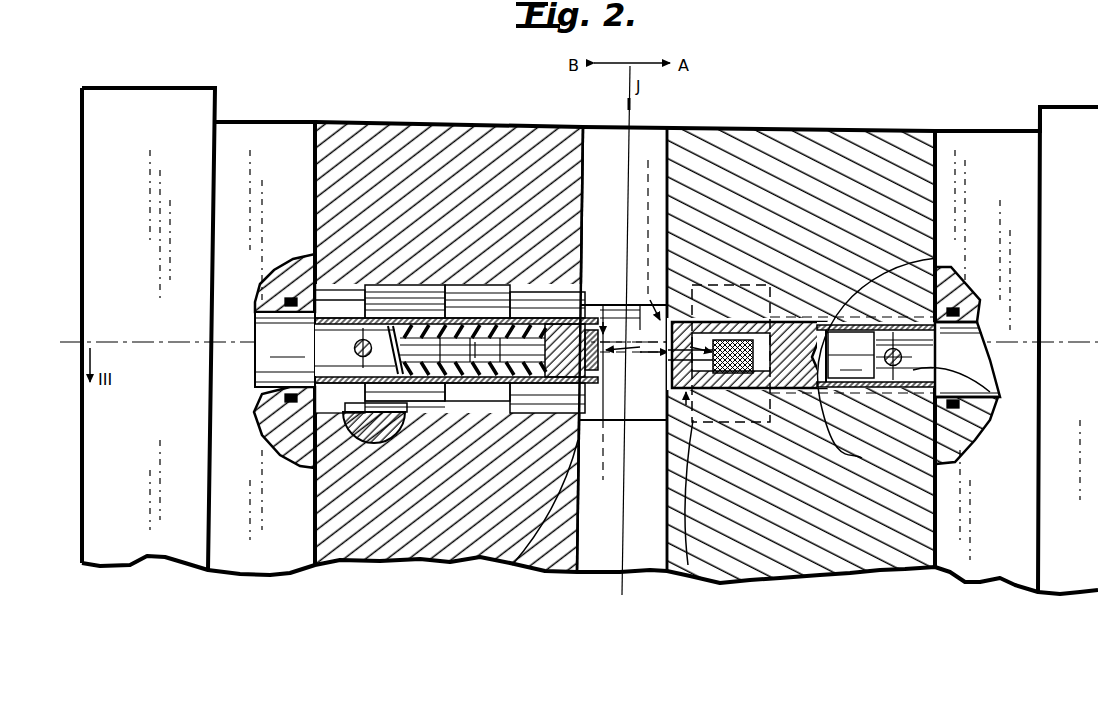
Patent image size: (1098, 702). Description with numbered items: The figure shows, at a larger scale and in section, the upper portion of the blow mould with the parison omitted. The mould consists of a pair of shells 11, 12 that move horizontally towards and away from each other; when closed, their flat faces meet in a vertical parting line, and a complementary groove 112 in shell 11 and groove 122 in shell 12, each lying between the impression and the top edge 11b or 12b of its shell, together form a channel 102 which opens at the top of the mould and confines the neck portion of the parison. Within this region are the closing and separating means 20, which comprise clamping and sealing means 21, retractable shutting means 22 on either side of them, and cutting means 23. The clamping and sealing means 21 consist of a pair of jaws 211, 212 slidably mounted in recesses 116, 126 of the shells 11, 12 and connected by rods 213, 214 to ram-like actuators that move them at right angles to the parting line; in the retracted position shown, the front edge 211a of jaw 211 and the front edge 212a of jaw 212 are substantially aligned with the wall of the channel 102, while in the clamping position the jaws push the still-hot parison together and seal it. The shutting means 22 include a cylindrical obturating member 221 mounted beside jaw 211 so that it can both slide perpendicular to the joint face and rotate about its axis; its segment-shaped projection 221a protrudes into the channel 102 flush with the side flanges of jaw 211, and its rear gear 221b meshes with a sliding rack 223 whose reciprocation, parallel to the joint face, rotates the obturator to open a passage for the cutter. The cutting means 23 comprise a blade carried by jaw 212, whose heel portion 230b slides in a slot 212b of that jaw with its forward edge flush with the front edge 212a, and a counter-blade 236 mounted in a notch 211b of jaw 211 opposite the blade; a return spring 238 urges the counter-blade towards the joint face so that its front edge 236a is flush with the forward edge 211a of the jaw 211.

The shell 11 is at (326, 110).
The top edge of shell 11b is at (372, 122).
The shell 12 is at (1004, 128).
The top edge of shell 12b is at (858, 130).
The closing and separating means 20 is at (795, 256).
The clamping and sealing means 21 is at (512, 570).
The retractable shutting means 22 is at (470, 284).
The cutting means 23 is at (634, 338).
The channel 102 is at (623, 290).
The groove 112 is at (600, 140).
The recess 116 is at (302, 262).
The groove 122 is at (652, 150).
The recess 126 is at (935, 258).
The jaw 211 is at (481, 386).
The front edge of jaw 211a is at (600, 300).
The notch of jaw 211b is at (522, 386).
The jaw 212 is at (936, 478).
The front edge of jaw 212a is at (652, 298).
The slot of jaw 212b is at (710, 300).
The rod 213 is at (318, 362).
The rod 214 is at (978, 389).
The obturating member 221 is at (456, 286).
The projection of obturating member 221a is at (606, 305).
The gear of obturating member 221b is at (417, 286).
The sliding rack 223 is at (306, 466).
The heel portion of blade 230b is at (666, 380).
The counter-blade 236 is at (604, 450).
The front edge of counter-blade 236a is at (595, 370).
The return spring 238 is at (448, 398).